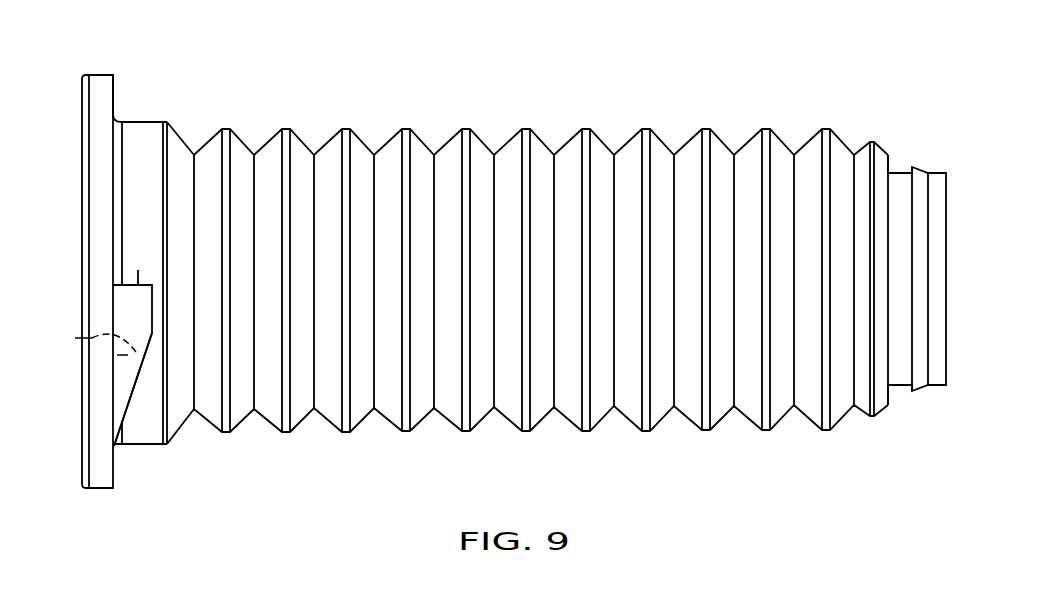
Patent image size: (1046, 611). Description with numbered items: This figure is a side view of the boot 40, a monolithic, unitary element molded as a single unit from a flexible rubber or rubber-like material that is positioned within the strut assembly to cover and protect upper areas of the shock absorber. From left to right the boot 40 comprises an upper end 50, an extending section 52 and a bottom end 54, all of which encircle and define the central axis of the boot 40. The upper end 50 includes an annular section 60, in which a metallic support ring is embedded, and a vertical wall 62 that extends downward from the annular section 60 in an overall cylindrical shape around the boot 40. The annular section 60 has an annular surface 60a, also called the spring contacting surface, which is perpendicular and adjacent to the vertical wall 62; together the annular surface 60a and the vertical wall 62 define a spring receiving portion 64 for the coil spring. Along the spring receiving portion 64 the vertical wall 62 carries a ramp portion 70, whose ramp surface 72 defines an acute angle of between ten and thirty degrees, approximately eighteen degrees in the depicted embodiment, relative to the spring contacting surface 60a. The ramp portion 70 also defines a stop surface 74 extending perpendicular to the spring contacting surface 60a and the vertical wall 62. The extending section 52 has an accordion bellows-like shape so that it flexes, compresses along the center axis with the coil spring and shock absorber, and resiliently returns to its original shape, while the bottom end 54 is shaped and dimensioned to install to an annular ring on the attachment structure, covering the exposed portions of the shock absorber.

The boot 40 is at (753, 85).
The upper end 50 is at (82, 102).
The extending section 52 is at (580, 130).
The bottom end 54 is at (936, 173).
The annular section 60 is at (100, 84).
The annular surface 60a is at (113, 91).
The vertical wall 62 is at (145, 121).
The spring receiving portion 64 is at (208, 50).
The ramp portion 70 is at (130, 307).
The ramp surface 72 is at (138, 382).
The stop surface 74 is at (139, 283).